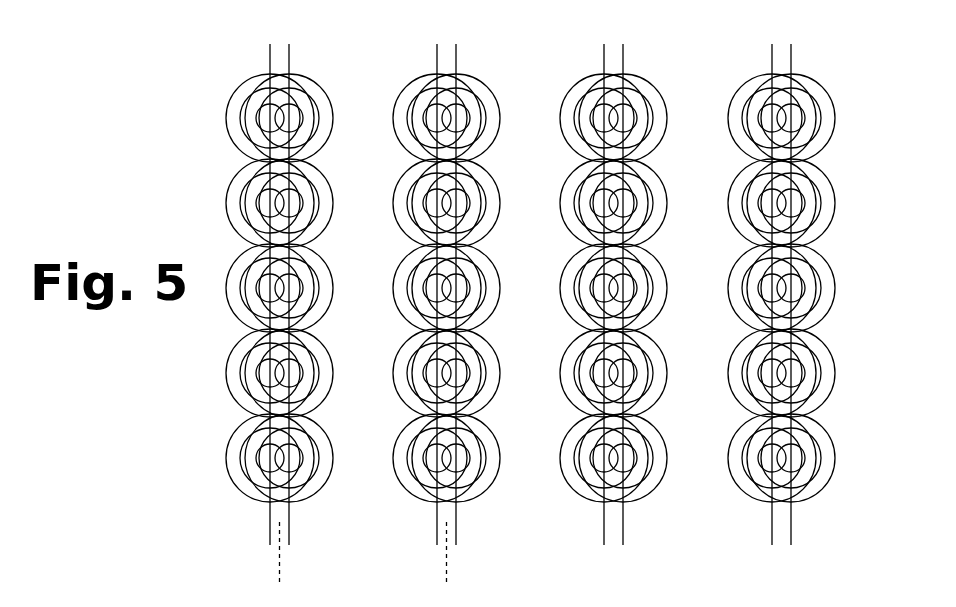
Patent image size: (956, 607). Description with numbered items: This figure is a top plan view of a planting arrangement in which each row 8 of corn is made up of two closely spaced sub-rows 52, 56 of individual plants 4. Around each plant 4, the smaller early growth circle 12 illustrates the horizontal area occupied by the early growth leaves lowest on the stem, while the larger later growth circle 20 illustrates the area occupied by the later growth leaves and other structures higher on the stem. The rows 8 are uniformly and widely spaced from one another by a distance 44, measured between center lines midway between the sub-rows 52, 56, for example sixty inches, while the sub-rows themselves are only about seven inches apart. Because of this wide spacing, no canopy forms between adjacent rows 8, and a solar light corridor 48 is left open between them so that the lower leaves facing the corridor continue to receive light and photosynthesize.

The individual corn plant 4 is at (433, 117).
The row of corn plants 8 is at (308, 527).
The early growth circle 12 is at (320, 287).
The later growth circle 20 is at (225, 203).
The row spacing distance 44 is at (434, 573).
The solar light corridor 48 is at (377, 432).
The first sub-row 52 is at (268, 73).
The second sub-row 56 is at (291, 63).